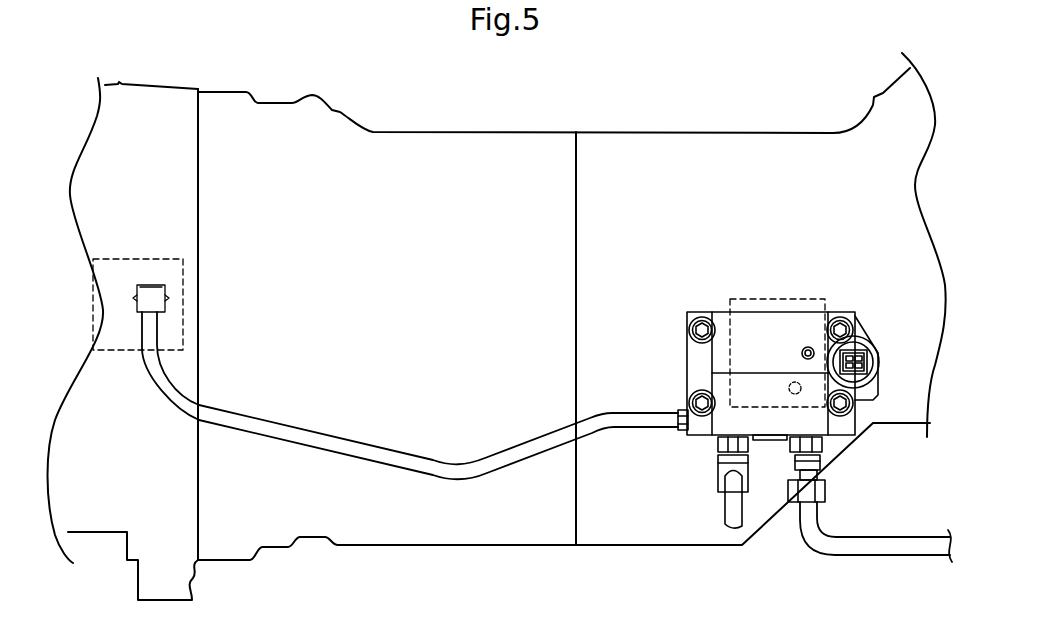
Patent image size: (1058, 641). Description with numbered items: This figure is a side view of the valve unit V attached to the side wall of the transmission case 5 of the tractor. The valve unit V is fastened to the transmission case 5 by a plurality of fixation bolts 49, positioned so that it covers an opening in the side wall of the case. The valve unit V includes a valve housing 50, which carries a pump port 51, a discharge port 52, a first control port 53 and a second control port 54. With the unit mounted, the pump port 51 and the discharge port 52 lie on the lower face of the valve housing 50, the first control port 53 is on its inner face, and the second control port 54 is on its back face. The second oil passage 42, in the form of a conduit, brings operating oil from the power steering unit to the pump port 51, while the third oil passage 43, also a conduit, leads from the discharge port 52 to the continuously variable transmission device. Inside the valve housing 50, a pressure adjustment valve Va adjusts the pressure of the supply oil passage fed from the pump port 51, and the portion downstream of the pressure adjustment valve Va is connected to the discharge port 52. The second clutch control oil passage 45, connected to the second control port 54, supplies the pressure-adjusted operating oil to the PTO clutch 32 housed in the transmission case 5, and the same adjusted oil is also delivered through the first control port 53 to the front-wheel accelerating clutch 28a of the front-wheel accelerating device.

The transmission case 5 is at (635, 132).
The valve unit V is at (768, 248).
The front-wheel accelerating clutch 28a is at (822, 296).
The PTO clutch 32 is at (128, 260).
The second clutch control oil passage 45 is at (394, 450).
The fixation bolts 49 is at (690, 328).
The valve housing 50 is at (777, 318).
The first control port 53 is at (787, 383).
The second control port 54 is at (680, 413).
The discharge port 52 is at (718, 443).
The third oil passage 43 is at (728, 507).
The pressure adjustment valve Va is at (773, 443).
The pump port 51 is at (817, 443).
The second oil passage 42 is at (880, 548).